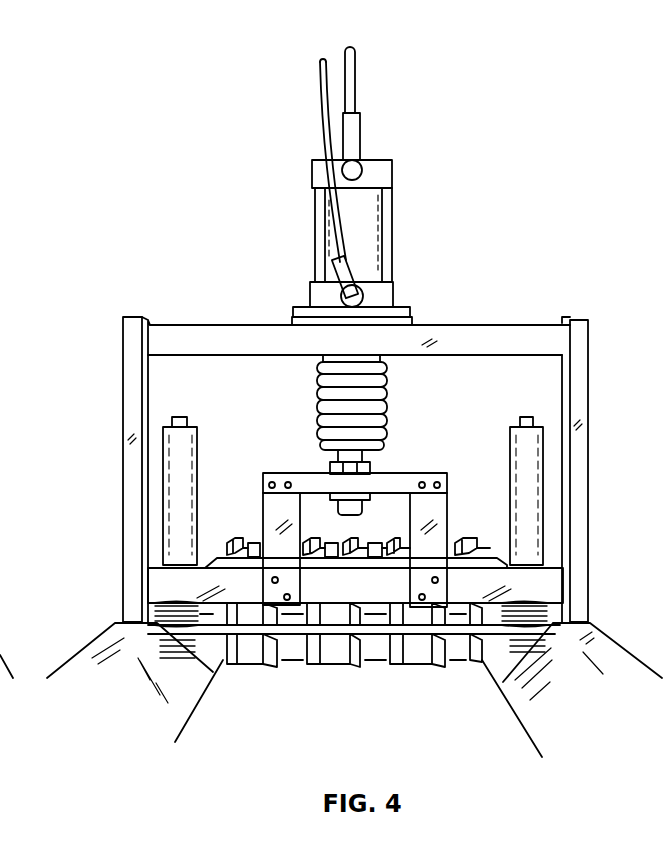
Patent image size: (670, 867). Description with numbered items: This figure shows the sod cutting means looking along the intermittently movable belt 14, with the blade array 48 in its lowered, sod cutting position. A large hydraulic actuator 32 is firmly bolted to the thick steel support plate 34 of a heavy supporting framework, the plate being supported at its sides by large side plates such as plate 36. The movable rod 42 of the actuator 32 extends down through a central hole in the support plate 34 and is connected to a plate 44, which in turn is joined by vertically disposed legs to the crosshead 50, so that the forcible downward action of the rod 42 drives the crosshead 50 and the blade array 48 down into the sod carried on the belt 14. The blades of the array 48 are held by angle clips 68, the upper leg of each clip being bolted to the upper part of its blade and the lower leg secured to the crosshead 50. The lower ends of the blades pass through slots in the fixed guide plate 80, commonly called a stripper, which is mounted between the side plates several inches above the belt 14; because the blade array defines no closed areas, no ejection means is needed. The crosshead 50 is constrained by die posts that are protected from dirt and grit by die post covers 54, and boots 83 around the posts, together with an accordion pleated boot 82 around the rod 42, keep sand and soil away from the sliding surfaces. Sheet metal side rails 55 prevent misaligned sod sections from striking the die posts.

The belt 14 is at (535, 742).
The hydraulic actuator 32 is at (395, 221).
The support plate 34 is at (488, 323).
The side plate 36 is at (590, 358).
The movable rod 42 is at (330, 462).
The plate 44 is at (398, 472).
The blade array 48 is at (343, 668).
The crosshead 50 is at (568, 590).
The die post cover 54 is at (163, 465).
The side rails 55 is at (75, 653).
The angle clip 68 is at (250, 540).
The fixed guide plate 80 is at (410, 668).
The accordion pleated boot 82 is at (388, 395).
The boot 83 is at (157, 623).